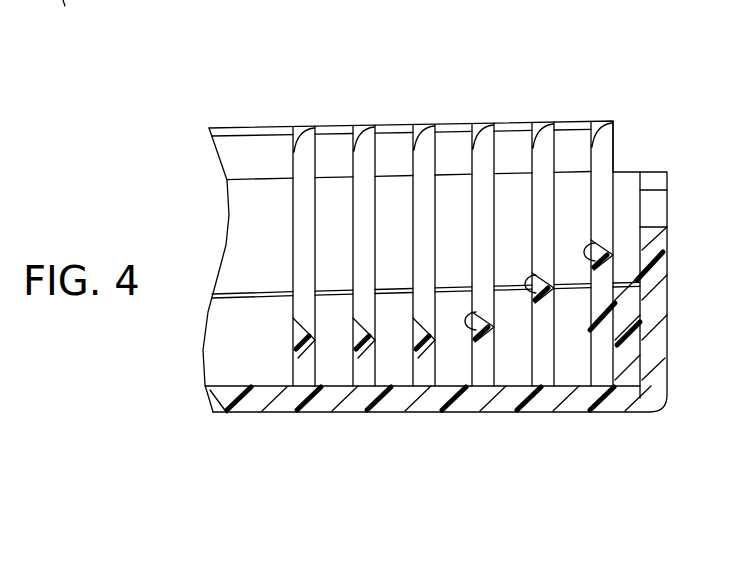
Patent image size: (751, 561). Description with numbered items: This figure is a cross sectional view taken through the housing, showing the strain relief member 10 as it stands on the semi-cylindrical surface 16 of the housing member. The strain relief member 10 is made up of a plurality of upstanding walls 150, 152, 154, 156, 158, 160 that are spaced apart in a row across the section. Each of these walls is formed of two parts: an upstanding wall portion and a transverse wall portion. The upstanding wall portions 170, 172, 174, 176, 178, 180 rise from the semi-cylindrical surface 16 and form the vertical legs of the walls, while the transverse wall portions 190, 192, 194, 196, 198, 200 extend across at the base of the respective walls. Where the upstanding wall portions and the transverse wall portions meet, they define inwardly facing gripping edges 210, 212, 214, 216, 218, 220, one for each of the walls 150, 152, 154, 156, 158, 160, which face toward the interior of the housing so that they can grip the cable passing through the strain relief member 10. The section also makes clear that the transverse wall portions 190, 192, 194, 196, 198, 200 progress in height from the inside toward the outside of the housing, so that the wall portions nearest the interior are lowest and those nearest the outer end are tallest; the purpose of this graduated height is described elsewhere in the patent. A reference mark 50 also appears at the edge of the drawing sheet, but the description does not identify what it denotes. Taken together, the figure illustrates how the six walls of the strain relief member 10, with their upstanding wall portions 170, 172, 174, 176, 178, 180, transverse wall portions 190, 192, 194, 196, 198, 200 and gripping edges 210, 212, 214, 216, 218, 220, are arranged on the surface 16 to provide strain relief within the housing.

The strain relief member 10 is at (504, 80).
The semi-cylindrical surface 16 is at (247, 408).
The tool 50 is at (61, 19).
The upstanding wall 150 is at (298, 120).
The upstanding wall 152 is at (363, 112).
The upstanding wall 154 is at (425, 110).
The upstanding wall 156 is at (492, 108).
The upstanding wall 158 is at (552, 108).
The upstanding wall 160 is at (608, 106).
The upstanding wall portion 170 is at (301, 198).
The upstanding wall portion 172 is at (365, 206).
The upstanding wall portion 174 is at (423, 215).
The upstanding wall portion 176 is at (482, 237).
The upstanding wall portion 178 is at (540, 200).
The upstanding wall portion 180 is at (602, 222).
The transverse wall portion 190 is at (302, 355).
The transverse wall portion 192 is at (362, 352).
The transverse wall portion 194 is at (422, 352).
The transverse wall portion 196 is at (476, 348).
The transverse wall portion 198 is at (543, 338).
The transverse wall portion 200 is at (600, 332).
The inwardly facing gripping edge 210 is at (293, 326).
The inwardly facing gripping edge 212 is at (316, 360).
The inwardly facing gripping edge 214 is at (373, 360).
The inwardly facing gripping edge 216 is at (460, 329).
The inwardly facing gripping edge 218 is at (520, 293).
The inwardly facing gripping edge 220 is at (595, 263).